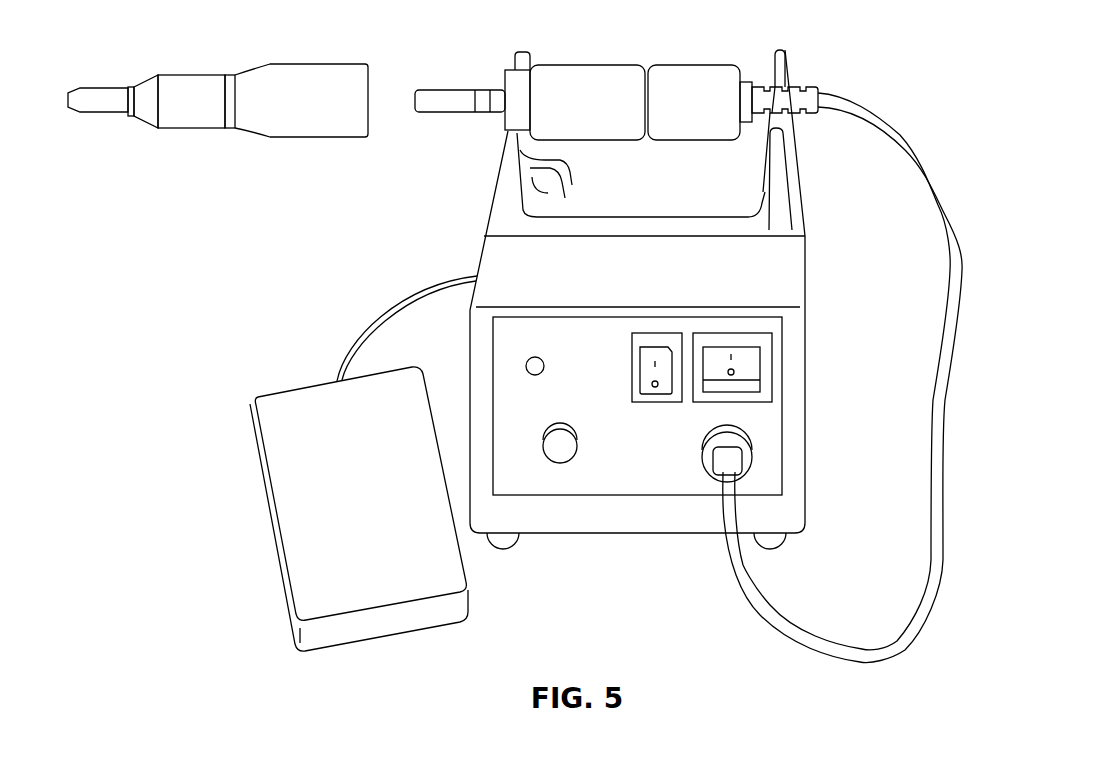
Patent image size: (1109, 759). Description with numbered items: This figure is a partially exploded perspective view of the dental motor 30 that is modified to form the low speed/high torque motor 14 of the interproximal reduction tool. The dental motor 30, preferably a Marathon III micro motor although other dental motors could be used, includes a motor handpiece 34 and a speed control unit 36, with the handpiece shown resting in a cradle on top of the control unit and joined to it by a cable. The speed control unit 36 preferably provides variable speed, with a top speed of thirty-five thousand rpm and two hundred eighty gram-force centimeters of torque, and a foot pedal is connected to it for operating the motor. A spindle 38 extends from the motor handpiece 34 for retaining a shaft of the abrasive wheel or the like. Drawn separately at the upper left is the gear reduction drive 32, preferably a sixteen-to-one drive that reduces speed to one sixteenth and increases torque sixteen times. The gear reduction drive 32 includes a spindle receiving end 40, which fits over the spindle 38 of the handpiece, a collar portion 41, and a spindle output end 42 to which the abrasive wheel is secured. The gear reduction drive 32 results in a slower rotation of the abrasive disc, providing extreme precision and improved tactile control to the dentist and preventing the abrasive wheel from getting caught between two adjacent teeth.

The low speed/high torque motor 14 is at (888, 103).
The dental motor 30 is at (689, 299).
The gear reduction drive 32 is at (277, 137).
The motor handpiece 34 is at (597, 78).
The speed control unit 36 is at (798, 397).
The spindle 38 is at (442, 105).
The spindle receiving end 40 is at (234, 148).
The collar portion 41 is at (205, 128).
The spindle output end 42 is at (103, 112).